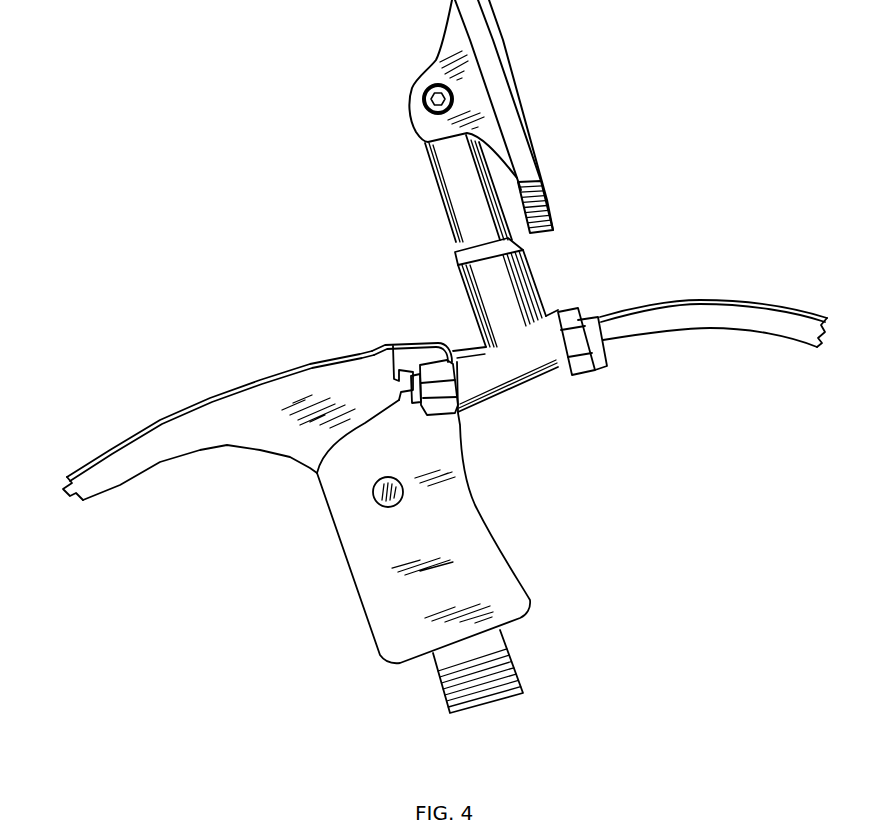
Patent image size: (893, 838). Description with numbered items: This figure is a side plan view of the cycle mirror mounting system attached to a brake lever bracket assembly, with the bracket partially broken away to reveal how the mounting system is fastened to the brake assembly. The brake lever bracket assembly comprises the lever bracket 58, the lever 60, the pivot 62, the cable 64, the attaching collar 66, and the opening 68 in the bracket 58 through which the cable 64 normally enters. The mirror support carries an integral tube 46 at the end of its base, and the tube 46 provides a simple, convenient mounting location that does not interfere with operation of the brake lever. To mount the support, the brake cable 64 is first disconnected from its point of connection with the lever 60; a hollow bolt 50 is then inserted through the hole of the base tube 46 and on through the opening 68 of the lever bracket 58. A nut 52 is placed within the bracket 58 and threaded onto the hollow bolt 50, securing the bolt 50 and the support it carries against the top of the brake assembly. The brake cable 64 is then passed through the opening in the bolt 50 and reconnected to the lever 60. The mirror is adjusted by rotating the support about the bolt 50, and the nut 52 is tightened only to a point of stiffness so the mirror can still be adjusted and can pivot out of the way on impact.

The tube 46 is at (533, 382).
The hollow bolt 50 is at (593, 347).
The nut 52 is at (462, 424).
The lever bracket 58 is at (490, 553).
The lever 60 is at (167, 442).
The pivot 62 is at (398, 497).
The cable 64 is at (713, 312).
The attaching collar 66 is at (507, 673).
The opening in bracket 68 is at (466, 350).